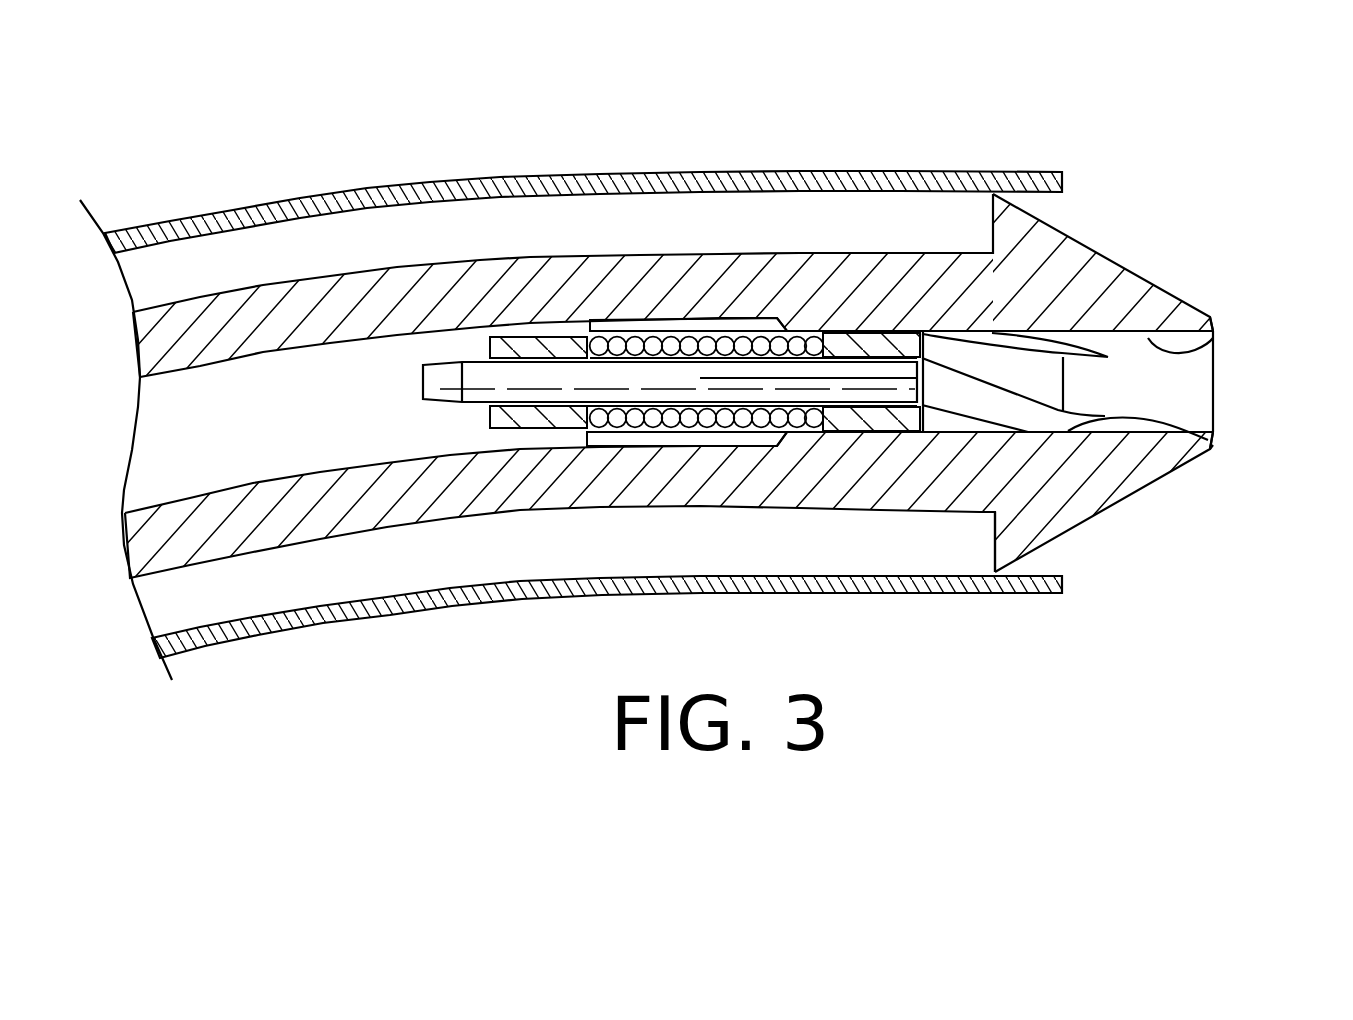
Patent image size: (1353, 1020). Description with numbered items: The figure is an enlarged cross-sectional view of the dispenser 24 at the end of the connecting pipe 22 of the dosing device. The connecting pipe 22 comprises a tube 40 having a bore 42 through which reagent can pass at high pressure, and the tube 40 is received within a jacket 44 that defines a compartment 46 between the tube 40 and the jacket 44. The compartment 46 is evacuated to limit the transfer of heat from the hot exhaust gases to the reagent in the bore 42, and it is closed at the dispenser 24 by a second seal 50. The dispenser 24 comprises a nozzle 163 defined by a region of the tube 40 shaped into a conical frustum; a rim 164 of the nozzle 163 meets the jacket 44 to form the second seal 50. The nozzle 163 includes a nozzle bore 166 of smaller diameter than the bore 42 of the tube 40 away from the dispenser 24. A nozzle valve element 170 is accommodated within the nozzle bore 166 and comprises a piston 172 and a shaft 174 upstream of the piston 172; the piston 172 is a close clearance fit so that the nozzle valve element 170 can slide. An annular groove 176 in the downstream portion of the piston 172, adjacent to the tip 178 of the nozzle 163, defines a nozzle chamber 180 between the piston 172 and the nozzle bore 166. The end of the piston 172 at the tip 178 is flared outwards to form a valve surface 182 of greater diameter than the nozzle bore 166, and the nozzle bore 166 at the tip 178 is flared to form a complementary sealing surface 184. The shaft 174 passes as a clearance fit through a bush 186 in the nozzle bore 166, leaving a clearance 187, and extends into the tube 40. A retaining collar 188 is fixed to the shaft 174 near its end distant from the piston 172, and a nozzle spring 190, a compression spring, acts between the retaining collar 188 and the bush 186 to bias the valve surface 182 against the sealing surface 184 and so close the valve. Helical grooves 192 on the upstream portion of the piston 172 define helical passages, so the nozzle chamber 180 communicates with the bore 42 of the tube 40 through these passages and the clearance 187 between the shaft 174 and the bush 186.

The connecting pipe 22 is at (165, 189).
The dispenser 24 is at (1070, 143).
The tube 40 is at (275, 300).
The bore 42 is at (347, 440).
The jacket 44 is at (328, 195).
The compartment 46 is at (440, 218).
The second seal 50 is at (1010, 591).
The nozzle 163 is at (1093, 513).
The rim 164 is at (1013, 206).
The nozzle bore 166 is at (948, 437).
The nozzle valve element 170 is at (1215, 395).
The piston 172 is at (940, 345).
The shaft 174 is at (617, 367).
The annular groove 176 is at (1215, 347).
The tip 178 is at (1220, 449).
The nozzle chamber 180 is at (1135, 330).
The valve surface 182 is at (1220, 330).
The sealing surface 184 is at (1188, 443).
The bush 186 is at (827, 331).
The clearance 187 is at (850, 435).
The retaining collar 188 is at (550, 420).
The nozzle spring 190 is at (702, 343).
The helical grooves 192 is at (975, 262).